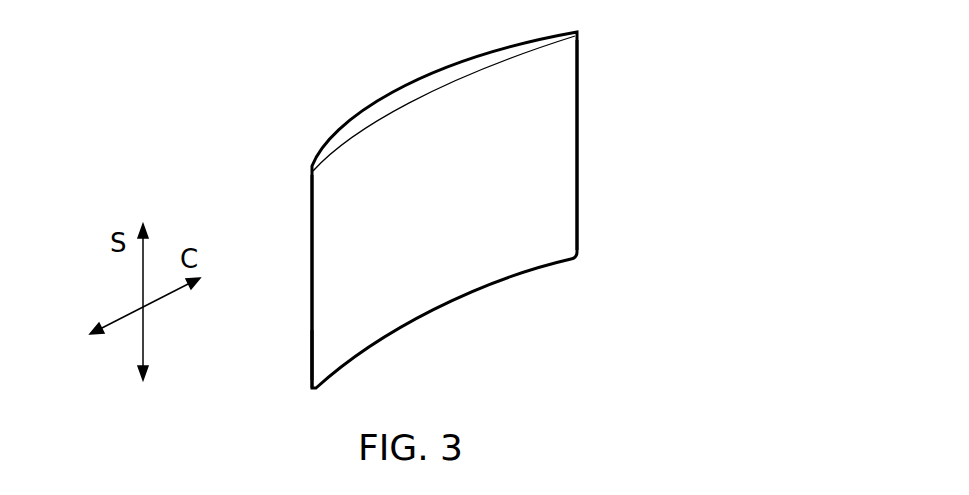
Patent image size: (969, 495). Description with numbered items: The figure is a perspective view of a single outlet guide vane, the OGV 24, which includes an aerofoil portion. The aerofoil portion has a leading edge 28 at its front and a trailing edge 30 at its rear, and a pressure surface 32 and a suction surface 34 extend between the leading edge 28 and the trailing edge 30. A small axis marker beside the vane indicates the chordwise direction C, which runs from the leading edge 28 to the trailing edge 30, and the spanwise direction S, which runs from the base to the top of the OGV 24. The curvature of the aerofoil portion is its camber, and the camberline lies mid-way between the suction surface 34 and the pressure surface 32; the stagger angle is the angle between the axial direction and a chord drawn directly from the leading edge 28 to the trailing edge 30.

The outlet guide vane 24 is at (655, 48).
The leading edge 28 is at (312, 208).
The trailing edge 30 is at (579, 132).
The pressure surface 32 is at (510, 245).
The suction surface 34 is at (288, 350).